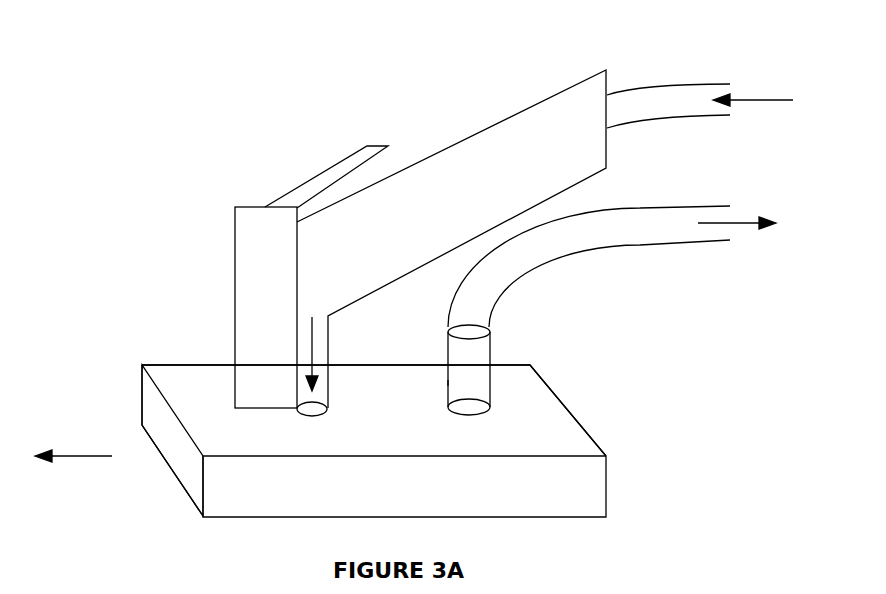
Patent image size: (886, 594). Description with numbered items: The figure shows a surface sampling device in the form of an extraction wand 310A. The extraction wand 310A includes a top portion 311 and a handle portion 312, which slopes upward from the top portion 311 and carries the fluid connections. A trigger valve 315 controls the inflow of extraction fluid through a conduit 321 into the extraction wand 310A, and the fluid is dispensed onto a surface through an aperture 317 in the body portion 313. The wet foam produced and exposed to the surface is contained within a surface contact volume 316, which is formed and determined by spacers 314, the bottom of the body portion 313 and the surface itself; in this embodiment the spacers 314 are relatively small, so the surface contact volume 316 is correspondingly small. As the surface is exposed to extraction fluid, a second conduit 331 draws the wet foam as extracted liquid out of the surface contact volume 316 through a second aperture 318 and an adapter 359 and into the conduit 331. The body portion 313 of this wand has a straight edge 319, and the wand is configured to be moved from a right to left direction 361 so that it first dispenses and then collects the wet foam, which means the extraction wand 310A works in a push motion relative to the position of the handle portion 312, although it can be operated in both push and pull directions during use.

The extraction wand 310A is at (96, 303).
The top portion 311 is at (235, 285).
The handle portion 312 is at (483, 130).
The body portion 313 is at (397, 496).
The spacer 314 is at (202, 513).
The trigger valve 315 is at (311, 179).
The surface contact volume 316 is at (162, 458).
The aperture 317 is at (310, 417).
The aperture 318 is at (467, 418).
The straight edge 319 is at (572, 402).
The conduit 321 is at (693, 117).
The conduit 331 is at (635, 247).
The adapter 359 is at (448, 383).
The right to left direction 361 is at (63, 455).